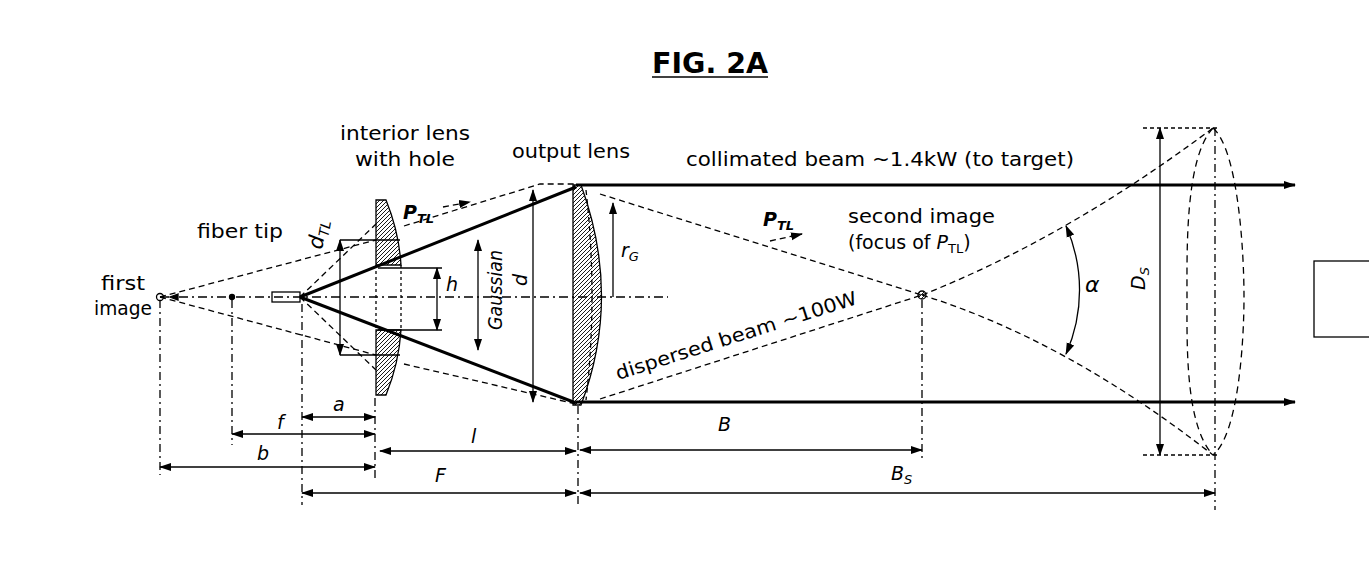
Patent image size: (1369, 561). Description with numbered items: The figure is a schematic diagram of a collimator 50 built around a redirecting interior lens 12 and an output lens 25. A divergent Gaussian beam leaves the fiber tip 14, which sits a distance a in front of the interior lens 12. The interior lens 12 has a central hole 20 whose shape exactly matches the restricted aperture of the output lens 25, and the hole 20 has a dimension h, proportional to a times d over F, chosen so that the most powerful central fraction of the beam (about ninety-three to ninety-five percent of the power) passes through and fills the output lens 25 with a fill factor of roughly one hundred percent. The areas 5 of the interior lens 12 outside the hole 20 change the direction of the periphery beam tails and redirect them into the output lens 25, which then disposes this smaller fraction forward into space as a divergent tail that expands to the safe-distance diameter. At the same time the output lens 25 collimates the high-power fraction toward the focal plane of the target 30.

The collimator 50 is at (234, 143).
The interior lens 12 is at (374, 212).
The fiber tip 14 is at (312, 281).
The hole 20 is at (403, 312).
The area 5 is at (399, 380).
The output lens 25 is at (600, 350).
The target 30 is at (1362, 306).